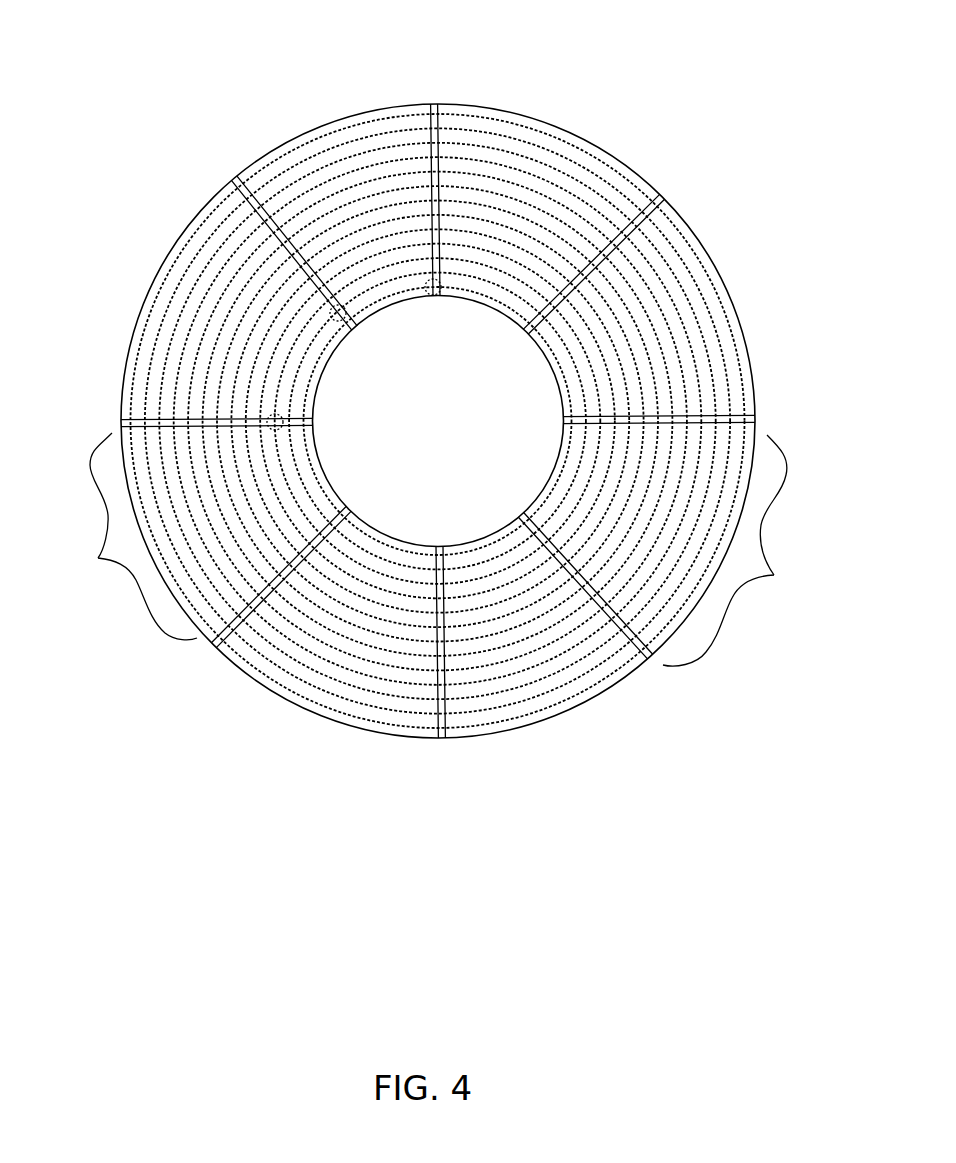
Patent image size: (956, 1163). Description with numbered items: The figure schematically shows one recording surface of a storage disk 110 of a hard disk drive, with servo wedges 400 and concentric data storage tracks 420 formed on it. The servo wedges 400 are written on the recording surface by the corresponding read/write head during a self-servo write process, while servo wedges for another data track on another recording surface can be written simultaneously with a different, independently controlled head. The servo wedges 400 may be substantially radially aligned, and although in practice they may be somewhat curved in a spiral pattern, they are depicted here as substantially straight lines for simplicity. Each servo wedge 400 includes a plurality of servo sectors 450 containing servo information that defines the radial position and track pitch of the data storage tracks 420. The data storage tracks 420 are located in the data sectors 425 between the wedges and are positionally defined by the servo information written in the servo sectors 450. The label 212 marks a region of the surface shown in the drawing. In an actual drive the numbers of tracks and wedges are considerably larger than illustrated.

The storage disk 110 is at (216, 195).
The surface region 212 is at (243, 356).
The servo wedge 400 is at (434, 68).
The data storage track 420 is at (692, 245).
The data sector 425 is at (98, 558).
The servo sector 450 is at (442, 293).